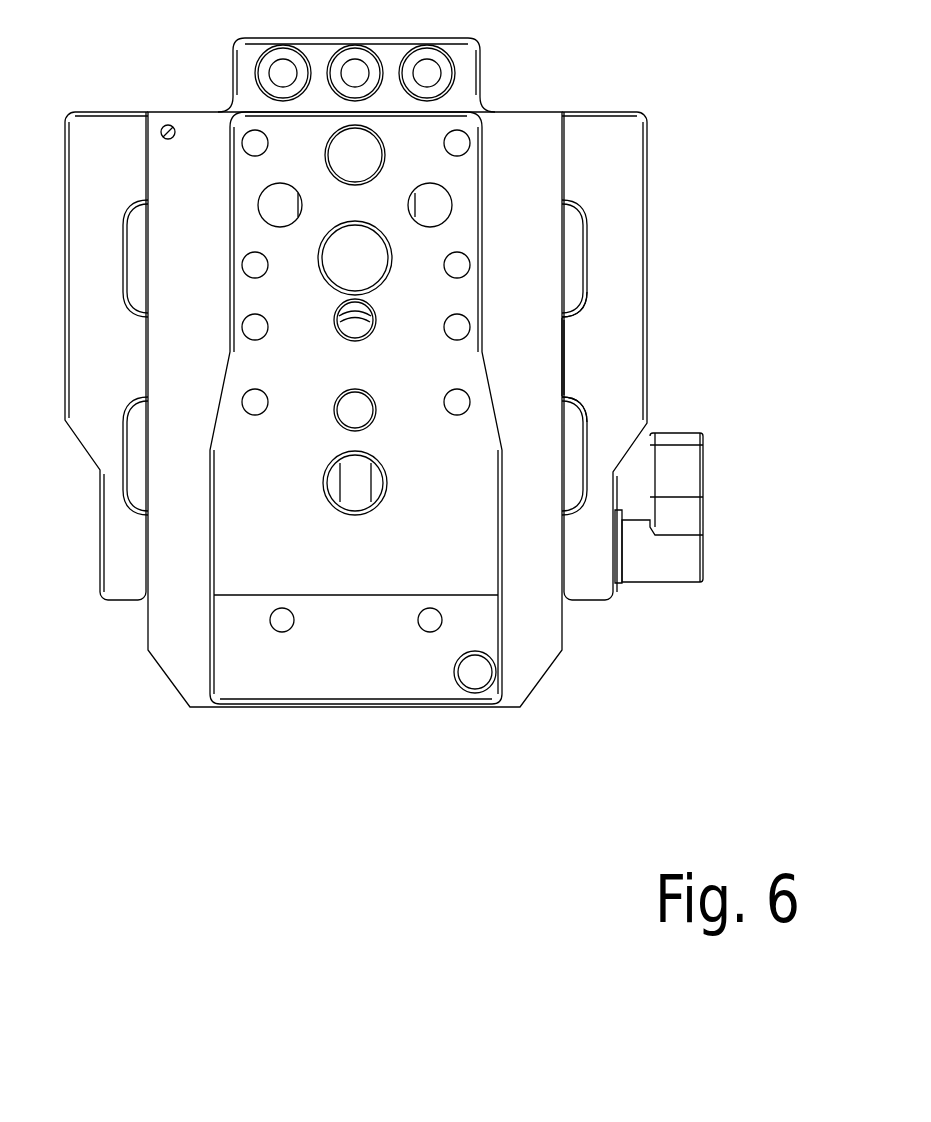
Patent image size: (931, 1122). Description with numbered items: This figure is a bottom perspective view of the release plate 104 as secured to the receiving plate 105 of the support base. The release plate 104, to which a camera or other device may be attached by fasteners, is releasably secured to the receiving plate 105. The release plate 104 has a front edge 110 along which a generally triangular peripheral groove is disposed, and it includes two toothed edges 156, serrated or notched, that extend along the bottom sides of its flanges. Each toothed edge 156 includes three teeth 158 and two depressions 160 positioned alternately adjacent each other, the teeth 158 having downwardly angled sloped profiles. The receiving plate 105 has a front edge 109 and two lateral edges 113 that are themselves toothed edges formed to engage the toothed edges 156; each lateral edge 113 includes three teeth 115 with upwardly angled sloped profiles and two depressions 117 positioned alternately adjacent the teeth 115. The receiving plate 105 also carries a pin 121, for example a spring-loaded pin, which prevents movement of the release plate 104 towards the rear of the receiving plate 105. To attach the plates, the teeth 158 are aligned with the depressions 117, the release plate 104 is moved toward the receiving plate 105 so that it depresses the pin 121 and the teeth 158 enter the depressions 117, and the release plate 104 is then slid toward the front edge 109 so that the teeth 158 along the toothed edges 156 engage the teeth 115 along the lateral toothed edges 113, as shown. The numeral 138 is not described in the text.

The release plate 104 is at (613, 355).
The receiving plate 105 is at (164, 682).
The front edge 109 is at (454, 75).
The front edge 110 is at (355, 73).
The lateral edges 113 is at (562, 310).
The teeth 115 is at (566, 405).
The depressions 117 is at (571, 468).
The pin 121 is at (476, 690).
The clamp member 138 is at (706, 558).
The toothed edges 156 is at (571, 317).
The teeth 158 is at (571, 378).
The depressions 160 is at (594, 252).